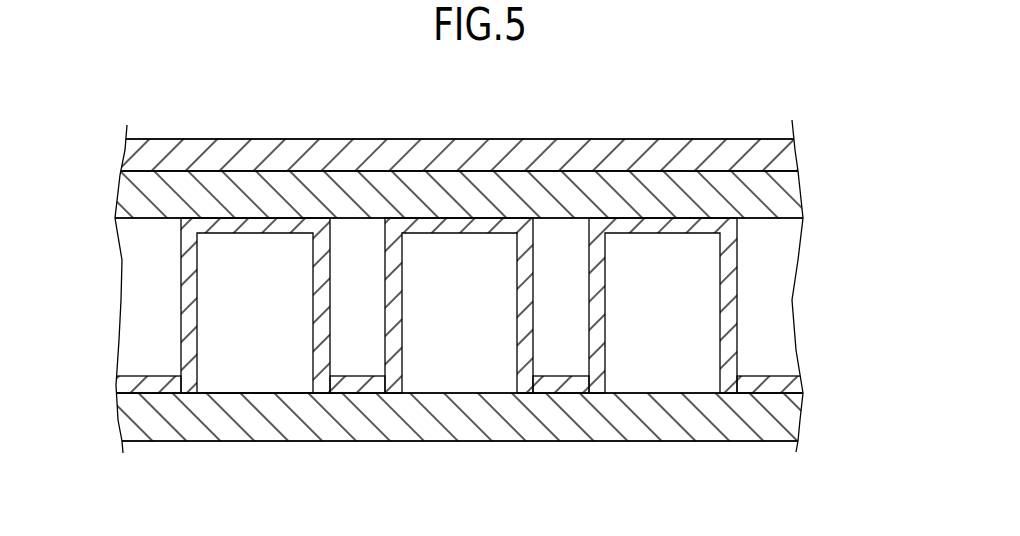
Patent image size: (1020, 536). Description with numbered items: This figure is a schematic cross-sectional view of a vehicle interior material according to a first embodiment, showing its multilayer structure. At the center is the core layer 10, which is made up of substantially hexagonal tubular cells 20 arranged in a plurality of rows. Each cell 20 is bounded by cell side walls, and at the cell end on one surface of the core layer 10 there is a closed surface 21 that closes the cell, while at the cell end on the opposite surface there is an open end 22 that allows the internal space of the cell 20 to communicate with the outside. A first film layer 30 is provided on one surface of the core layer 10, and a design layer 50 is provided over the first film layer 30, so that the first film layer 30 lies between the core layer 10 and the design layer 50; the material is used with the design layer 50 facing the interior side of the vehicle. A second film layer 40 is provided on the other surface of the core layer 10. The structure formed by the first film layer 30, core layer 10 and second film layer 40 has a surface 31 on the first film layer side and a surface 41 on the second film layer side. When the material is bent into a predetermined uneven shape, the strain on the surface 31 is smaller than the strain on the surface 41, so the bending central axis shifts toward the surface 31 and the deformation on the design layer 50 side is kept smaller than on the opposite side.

The core layer 10 is at (799, 303).
The cell 20 is at (438, 224).
The closed surface 21 is at (257, 217).
The open end 22 is at (243, 388).
The first film layer 30 is at (799, 190).
The surface on the first film layer side 31 is at (143, 167).
The second film layer 40 is at (800, 412).
The surface on the second film layer side 41 is at (162, 441).
The design layer 50 is at (792, 153).